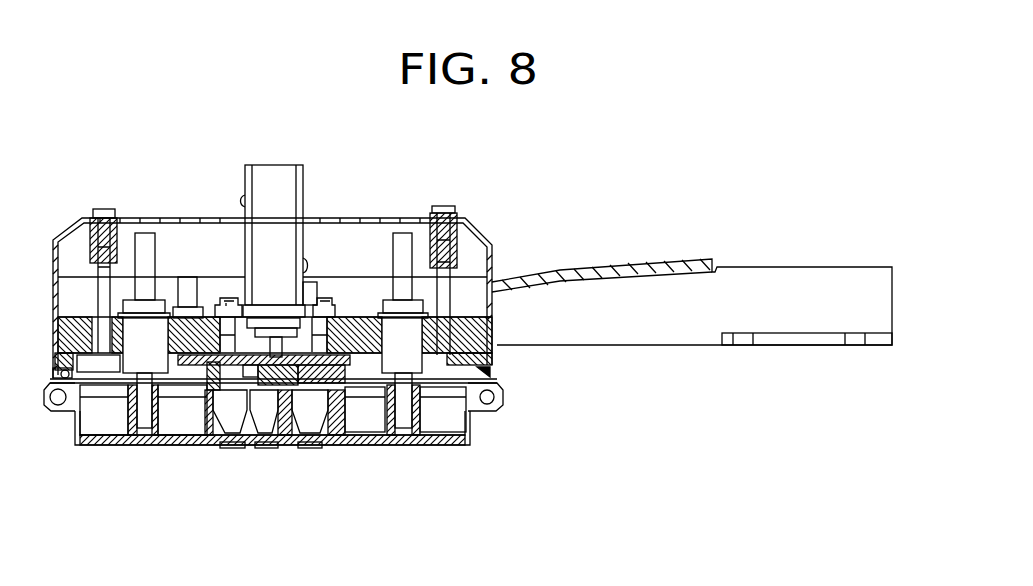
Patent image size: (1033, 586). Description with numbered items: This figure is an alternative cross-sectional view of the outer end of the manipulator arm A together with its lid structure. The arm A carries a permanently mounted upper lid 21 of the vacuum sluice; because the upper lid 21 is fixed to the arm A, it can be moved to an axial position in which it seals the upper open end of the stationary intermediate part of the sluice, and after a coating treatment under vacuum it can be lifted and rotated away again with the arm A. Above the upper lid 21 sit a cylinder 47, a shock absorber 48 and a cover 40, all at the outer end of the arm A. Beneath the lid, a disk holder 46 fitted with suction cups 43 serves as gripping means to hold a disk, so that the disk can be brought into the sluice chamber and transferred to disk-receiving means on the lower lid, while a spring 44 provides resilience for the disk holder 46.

The cover 40 is at (55, 238).
The cylinder 47 is at (245, 182).
The shock absorber 48 is at (192, 272).
The manipulator arm A is at (771, 288).
The upper lid 21 is at (477, 425).
The suction cups 43 is at (207, 448).
The spring 44 is at (281, 448).
The disk holder 46 is at (408, 446).